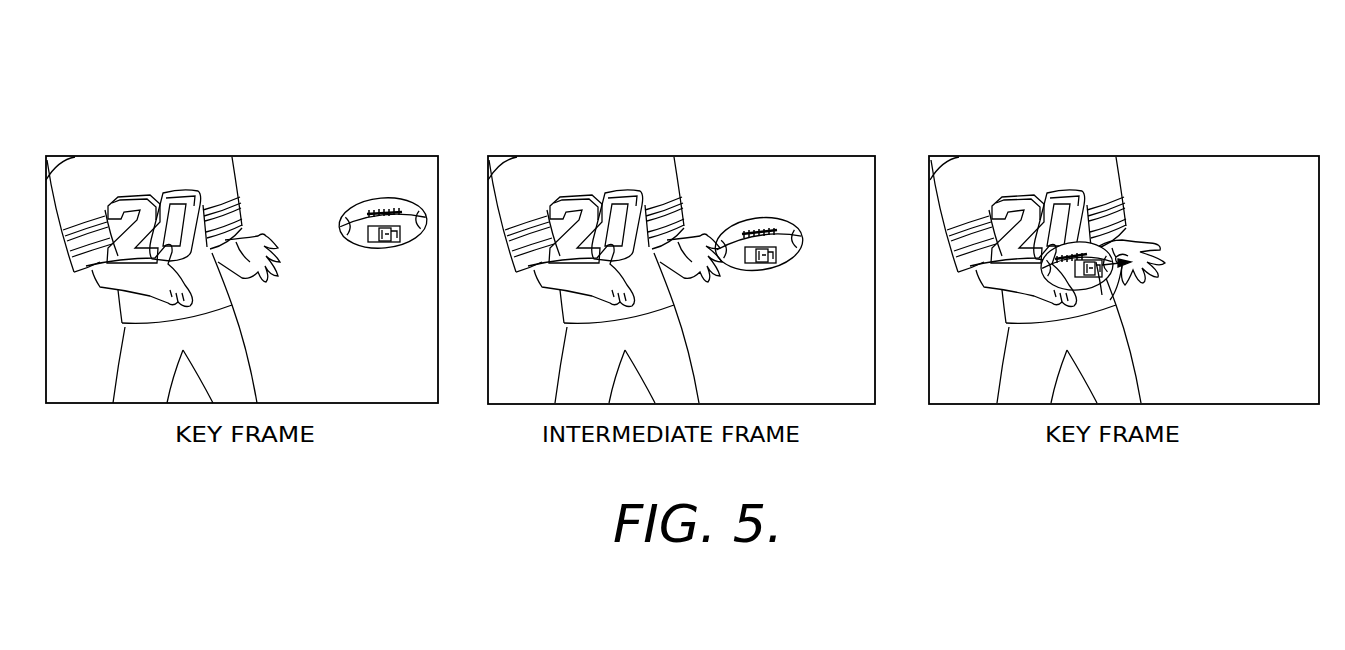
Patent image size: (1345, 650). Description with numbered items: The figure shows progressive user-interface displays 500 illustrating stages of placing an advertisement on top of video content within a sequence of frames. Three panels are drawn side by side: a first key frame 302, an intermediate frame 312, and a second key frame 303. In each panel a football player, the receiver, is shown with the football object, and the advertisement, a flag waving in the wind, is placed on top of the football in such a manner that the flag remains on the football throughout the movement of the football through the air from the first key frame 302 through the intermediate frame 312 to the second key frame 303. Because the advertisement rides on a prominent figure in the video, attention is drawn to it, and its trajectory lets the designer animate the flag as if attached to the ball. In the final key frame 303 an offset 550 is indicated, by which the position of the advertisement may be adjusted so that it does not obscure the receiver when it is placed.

The sequence of video frames 500 is at (220, 36).
The frame 302 is at (268, 156).
The frame 312 is at (712, 156).
The frame 303 is at (1152, 156).
The offset 550 is at (1122, 275).